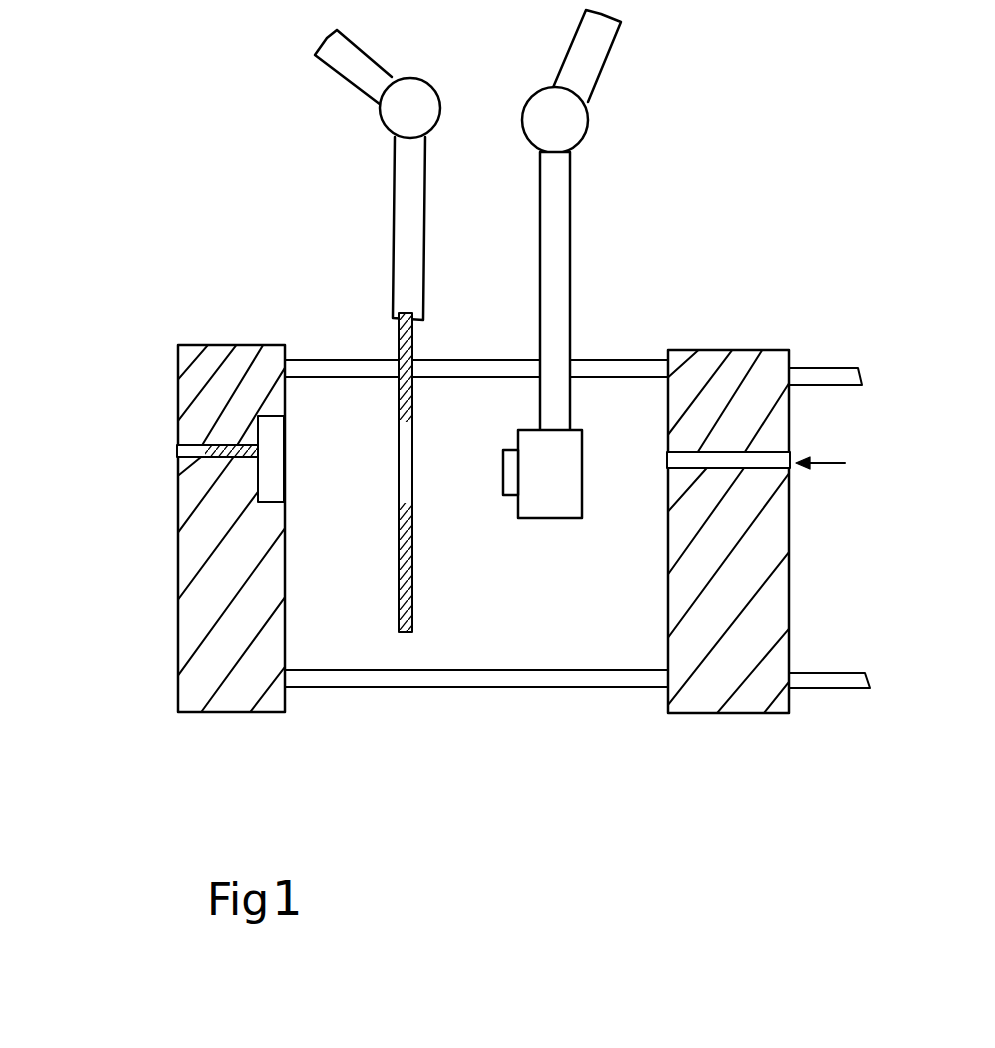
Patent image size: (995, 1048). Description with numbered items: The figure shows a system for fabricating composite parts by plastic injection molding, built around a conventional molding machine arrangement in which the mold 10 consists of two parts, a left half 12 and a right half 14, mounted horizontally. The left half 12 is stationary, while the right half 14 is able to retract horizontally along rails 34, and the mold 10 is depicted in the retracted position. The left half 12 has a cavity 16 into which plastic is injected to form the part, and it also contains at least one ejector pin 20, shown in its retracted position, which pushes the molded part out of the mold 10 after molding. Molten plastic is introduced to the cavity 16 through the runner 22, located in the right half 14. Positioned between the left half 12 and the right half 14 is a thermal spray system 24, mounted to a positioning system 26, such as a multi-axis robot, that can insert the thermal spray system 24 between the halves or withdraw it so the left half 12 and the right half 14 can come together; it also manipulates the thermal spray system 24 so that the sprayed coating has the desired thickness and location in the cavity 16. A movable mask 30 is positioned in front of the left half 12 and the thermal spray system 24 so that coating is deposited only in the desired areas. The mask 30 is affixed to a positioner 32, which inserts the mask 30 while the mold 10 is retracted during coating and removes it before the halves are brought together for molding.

The mold 10 is at (467, 549).
The left half 12 is at (172, 692).
The right half 14 is at (767, 716).
The cavity 16 is at (272, 490).
The ejector pin 20 is at (221, 446).
The runner 22 is at (752, 462).
The thermal spray system 24 is at (553, 495).
The positioning system 26 is at (554, 203).
The movable mask 30 is at (412, 608).
The positioner 32 is at (407, 192).
The rails 34 is at (617, 367).